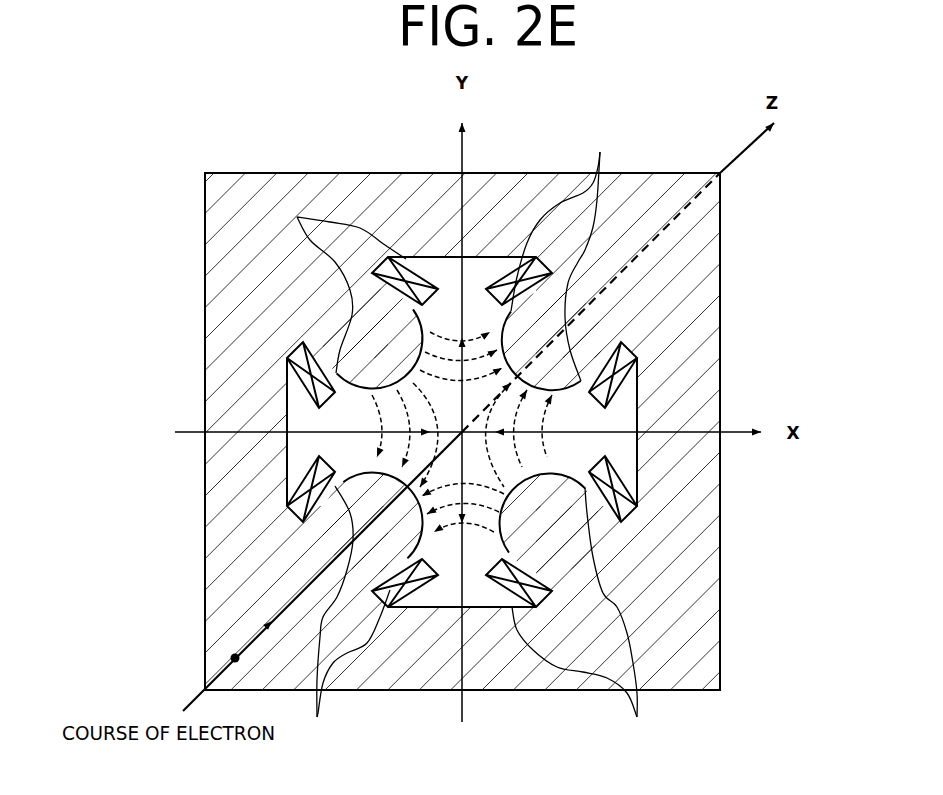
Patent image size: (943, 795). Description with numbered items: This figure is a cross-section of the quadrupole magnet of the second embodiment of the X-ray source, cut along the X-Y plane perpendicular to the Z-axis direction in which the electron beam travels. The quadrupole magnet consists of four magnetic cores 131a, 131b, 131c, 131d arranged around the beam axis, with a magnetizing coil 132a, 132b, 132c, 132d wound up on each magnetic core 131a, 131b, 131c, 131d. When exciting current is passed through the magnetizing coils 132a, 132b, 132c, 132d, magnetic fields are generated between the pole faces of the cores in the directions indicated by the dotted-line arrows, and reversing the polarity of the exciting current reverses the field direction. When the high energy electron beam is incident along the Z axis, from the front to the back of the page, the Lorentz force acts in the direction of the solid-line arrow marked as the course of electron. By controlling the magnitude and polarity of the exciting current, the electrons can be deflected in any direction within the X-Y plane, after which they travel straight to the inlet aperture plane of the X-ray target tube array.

The magnetic core 131a is at (617, 308).
The magnetic core 131b is at (617, 577).
The magnetic core 131c is at (313, 545).
The magnetic core 131d is at (323, 317).
The magnetizing coil 132a is at (600, 152).
The magnetizing coil 132b is at (637, 717).
The magnetizing coil 132c is at (317, 717).
The magnetizing coil 132d is at (297, 217).